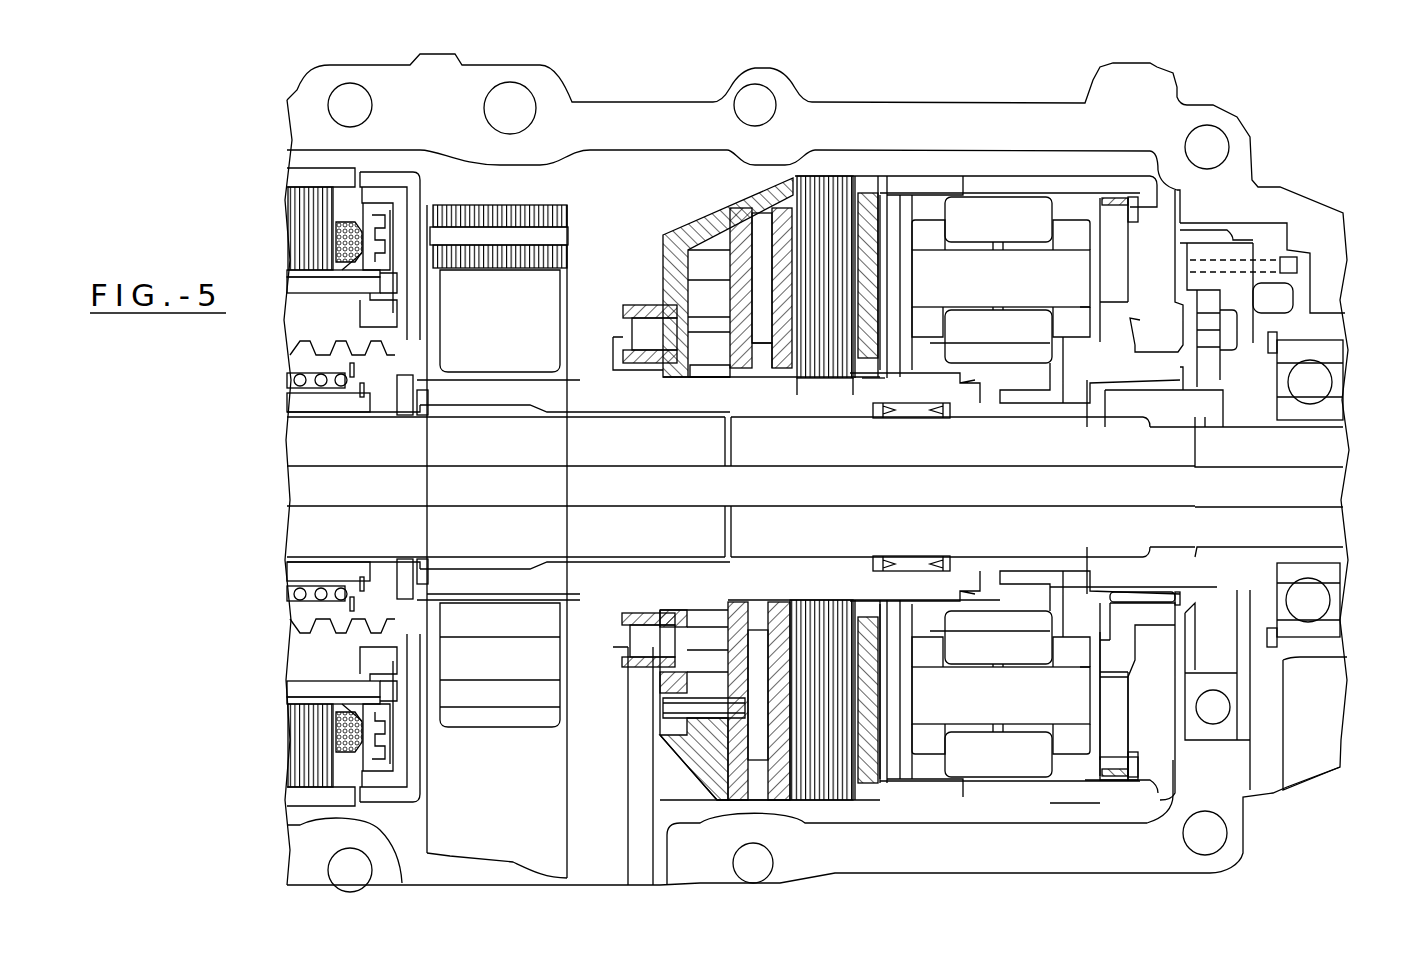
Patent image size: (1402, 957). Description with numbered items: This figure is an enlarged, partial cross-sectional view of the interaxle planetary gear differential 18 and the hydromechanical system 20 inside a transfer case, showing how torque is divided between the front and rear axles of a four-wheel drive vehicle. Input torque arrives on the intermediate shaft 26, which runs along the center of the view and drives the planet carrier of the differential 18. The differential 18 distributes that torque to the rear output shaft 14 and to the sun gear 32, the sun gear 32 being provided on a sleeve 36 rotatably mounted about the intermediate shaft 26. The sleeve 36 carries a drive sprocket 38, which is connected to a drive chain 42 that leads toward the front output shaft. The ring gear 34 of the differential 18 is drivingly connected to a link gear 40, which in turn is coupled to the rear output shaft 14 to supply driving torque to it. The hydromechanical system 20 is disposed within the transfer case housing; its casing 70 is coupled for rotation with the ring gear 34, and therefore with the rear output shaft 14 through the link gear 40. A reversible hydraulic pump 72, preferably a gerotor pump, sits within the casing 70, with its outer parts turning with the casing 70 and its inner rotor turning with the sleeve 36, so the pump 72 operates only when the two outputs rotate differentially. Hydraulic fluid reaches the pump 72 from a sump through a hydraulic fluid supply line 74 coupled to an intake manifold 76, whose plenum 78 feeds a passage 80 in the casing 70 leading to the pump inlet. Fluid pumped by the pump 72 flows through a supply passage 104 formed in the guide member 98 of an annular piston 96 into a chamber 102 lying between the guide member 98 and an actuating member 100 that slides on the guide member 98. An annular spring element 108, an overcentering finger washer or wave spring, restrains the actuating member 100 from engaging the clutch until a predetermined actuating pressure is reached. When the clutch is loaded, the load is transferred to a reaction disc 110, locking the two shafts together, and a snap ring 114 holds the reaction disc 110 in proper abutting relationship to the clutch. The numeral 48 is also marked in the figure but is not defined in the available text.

The rear output shaft 14 is at (1320, 520).
The interaxle planetary gear differential 18 is at (995, 178).
The hydromechanical system 20 is at (733, 262).
The intermediate shaft 26 is at (632, 456).
The sun gear 32 is at (980, 380).
The ring gear 34 is at (1092, 180).
The sleeve 36 is at (555, 400).
The drive sprocket 38 is at (497, 205).
The link gear 40 is at (1130, 330).
The drive chain 42 is at (572, 752).
The clutch hub 48 is at (826, 170).
The casing 70 is at (660, 262).
The reversible hydraulic pump 72 is at (750, 713).
The hydraulic fluid supply line 74 is at (625, 828).
The intake manifold 76 is at (620, 660).
The plenum 78 is at (647, 325).
The passage 80 is at (683, 637).
The annular piston 96 is at (745, 198).
The guide member 98 is at (760, 662).
The actuating member 100 is at (780, 360).
The chamber 102 is at (762, 750).
The supply passage 104 is at (730, 342).
The annular spring element 108 is at (800, 370).
The reaction disc 110 is at (870, 373).
The snap ring 114 is at (887, 200).